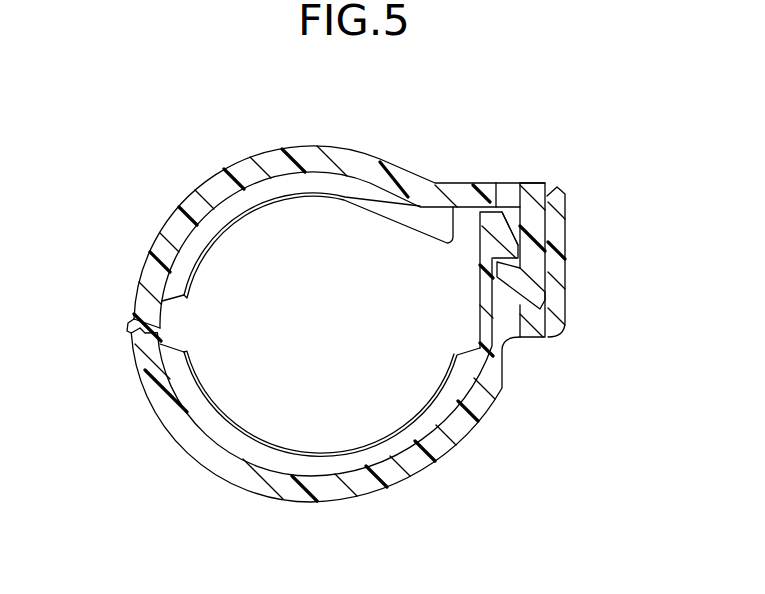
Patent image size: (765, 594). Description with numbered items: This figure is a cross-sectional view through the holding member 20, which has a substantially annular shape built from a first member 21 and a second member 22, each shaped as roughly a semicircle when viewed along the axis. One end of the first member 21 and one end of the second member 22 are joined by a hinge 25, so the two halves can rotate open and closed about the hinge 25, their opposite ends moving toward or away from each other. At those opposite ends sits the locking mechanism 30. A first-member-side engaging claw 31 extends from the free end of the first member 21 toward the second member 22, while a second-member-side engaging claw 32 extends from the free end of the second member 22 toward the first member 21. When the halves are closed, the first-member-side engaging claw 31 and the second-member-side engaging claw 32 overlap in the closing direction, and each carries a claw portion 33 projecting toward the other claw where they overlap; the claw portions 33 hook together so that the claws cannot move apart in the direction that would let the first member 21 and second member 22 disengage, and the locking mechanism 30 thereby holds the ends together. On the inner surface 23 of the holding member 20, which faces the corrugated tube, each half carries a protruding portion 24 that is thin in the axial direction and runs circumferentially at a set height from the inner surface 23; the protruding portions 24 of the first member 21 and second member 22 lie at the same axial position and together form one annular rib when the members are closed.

The holding member 20 is at (402, 133).
The first member 21 is at (217, 177).
The second member 22 is at (220, 478).
The inner surface 23 is at (265, 187).
The protruding portion 24 is at (343, 196).
The hinge 25 is at (128, 322).
The locking mechanism 30 is at (576, 185).
The first-member-side engaging claw 31 is at (540, 270).
The second-member-side engaging claw 32 is at (480, 274).
The claw portion 33 is at (516, 238).